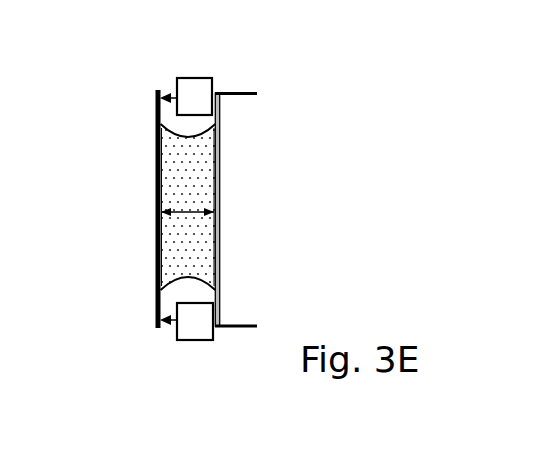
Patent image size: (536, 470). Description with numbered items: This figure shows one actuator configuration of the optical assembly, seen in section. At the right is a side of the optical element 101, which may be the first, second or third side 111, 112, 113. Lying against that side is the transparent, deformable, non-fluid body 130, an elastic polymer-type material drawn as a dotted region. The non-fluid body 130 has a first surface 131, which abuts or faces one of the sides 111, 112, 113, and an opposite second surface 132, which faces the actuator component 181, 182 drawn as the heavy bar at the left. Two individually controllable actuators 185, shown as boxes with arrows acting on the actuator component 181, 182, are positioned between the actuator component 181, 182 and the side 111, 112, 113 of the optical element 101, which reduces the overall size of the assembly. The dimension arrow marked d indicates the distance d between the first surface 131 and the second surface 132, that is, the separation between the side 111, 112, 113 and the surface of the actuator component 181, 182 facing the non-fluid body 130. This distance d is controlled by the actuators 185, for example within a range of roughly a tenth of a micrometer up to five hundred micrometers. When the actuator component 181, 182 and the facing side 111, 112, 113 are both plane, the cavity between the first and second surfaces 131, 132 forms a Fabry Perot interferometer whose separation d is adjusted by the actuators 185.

The optical element 101 is at (248, 227).
The first side 111 is at (308, 209).
The second side 112 is at (308, 209).
The third side 113 is at (219, 112).
The non-fluid body 130 is at (195, 164).
The first surface 131 is at (210, 258).
The second surface 132 is at (163, 250).
The actuator component 181 is at (95, 209).
The actuator component 182 is at (155, 142).
The actuator 185 is at (200, 88).
The distance d is at (187, 198).